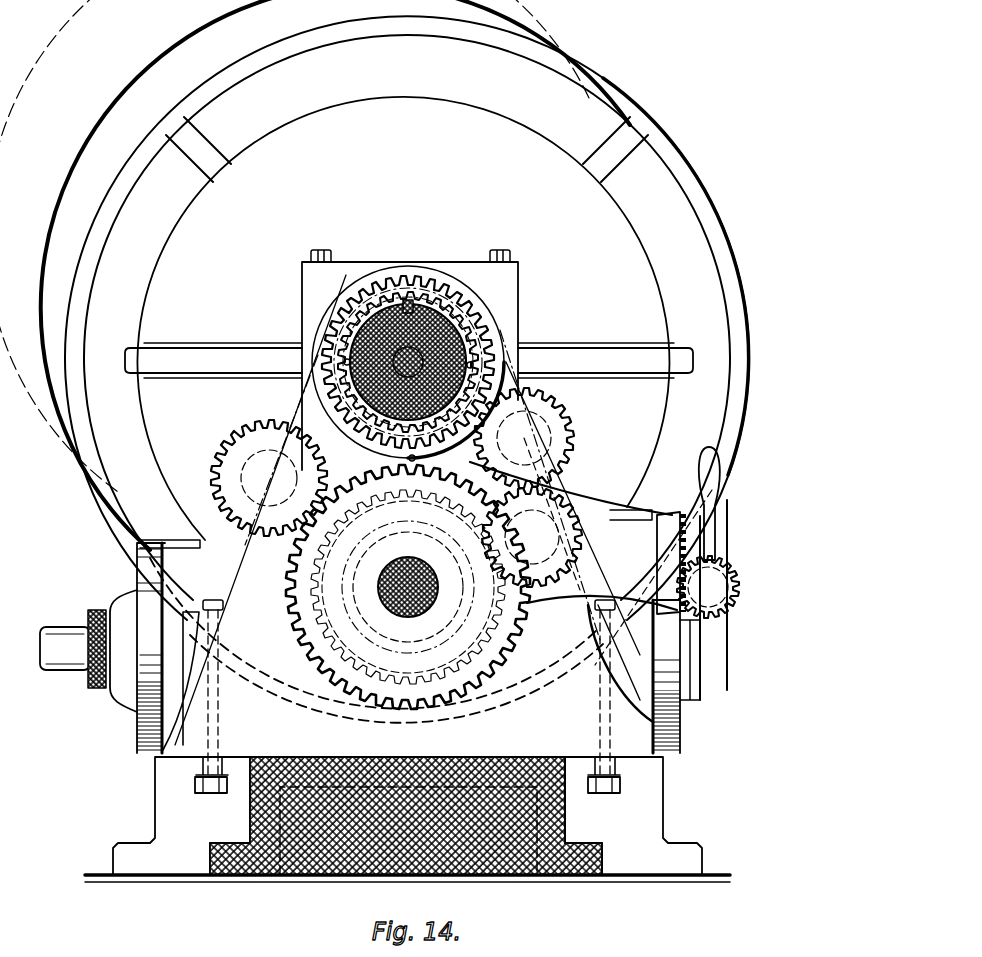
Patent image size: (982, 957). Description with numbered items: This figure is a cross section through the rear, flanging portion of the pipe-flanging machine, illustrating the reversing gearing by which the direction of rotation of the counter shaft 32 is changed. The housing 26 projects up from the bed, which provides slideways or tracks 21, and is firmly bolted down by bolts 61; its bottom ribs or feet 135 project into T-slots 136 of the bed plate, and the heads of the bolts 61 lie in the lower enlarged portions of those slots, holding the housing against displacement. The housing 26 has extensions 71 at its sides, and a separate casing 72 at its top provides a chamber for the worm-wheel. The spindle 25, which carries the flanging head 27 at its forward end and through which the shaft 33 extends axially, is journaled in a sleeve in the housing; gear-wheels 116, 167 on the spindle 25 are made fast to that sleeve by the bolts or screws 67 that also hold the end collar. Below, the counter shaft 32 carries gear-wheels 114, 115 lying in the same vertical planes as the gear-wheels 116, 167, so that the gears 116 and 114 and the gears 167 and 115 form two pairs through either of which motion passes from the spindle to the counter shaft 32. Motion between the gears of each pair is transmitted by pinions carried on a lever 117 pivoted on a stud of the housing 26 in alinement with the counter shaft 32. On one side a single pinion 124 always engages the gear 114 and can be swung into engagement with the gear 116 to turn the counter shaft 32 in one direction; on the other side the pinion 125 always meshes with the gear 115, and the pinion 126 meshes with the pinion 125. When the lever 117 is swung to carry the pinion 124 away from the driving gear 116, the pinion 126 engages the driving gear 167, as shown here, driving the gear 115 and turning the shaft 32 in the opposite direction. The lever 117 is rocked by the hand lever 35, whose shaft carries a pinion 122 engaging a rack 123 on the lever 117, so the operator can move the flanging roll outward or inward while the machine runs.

The flanging head 27 is at (374, 361).
The casing 72 is at (403, 322).
The extensions 71 is at (143, 412).
The shaft 33 is at (458, 300).
The bolts 61 is at (513, 263).
The gear-wheel 167 is at (392, 272).
The gear-wheel 116 is at (347, 362).
The spindle 25 is at (463, 350).
The bolts or screws 67 is at (340, 352).
The pinion 124 is at (243, 452).
The pinion 126 is at (574, 415).
The pinion 125 is at (574, 529).
The gear-wheel 114 is at (296, 633).
The gear-wheel 115 is at (318, 586).
The counter shaft 32 is at (413, 568).
The rack 123 is at (665, 541).
The hand lever 35 is at (718, 474).
The pinion 122 is at (740, 597).
The lever 117 is at (561, 605).
The housing 26 is at (160, 550).
The ribs or feet 135 is at (203, 762).
The T-slots 136 is at (197, 786).
The slideways or tracks 21 is at (665, 786).